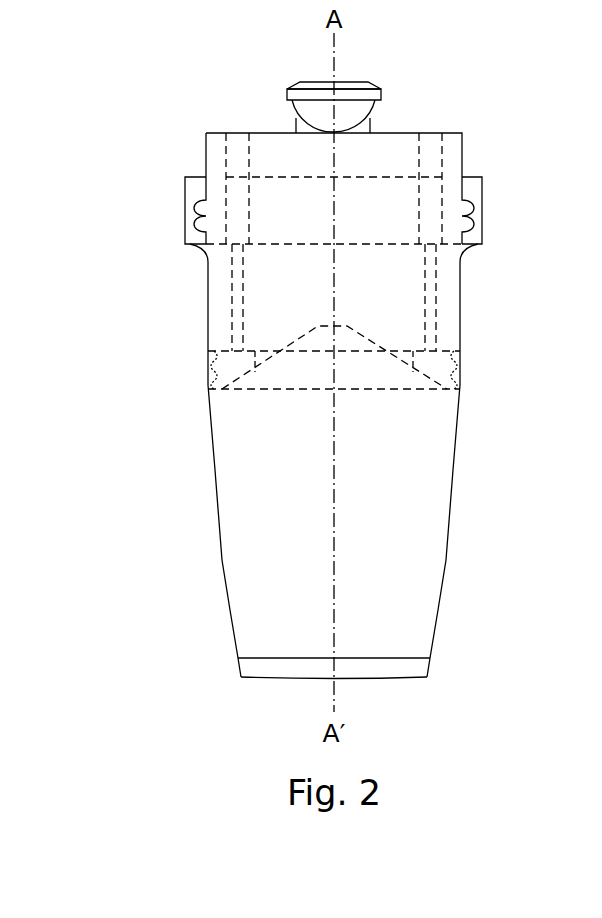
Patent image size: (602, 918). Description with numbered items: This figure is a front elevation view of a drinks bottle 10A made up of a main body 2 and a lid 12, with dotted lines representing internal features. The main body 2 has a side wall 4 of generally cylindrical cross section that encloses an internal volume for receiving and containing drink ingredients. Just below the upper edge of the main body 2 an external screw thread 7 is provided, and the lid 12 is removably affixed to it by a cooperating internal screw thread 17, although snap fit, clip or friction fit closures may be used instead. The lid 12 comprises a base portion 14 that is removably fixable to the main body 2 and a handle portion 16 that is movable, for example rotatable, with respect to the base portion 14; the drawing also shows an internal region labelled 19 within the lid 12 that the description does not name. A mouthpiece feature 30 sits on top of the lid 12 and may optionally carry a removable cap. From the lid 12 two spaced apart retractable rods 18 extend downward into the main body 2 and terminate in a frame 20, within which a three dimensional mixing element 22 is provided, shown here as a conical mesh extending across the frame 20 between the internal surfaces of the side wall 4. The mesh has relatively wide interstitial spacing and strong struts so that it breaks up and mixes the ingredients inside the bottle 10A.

The drinks bottle 10A is at (506, 112).
The mouthpiece feature 30 is at (375, 82).
The lid 12 is at (537, 147).
The handle portion 16 is at (462, 156).
The base portion 14 is at (475, 228).
The neck chamber 19 is at (252, 165).
The internal screw thread 17 is at (200, 210).
The external screw thread 7 is at (214, 219).
The retractable rods 18 is at (435, 290).
The main body 2 is at (472, 410).
The side wall 4 is at (460, 440).
The frame 20 is at (447, 363).
The mixing element 22 is at (343, 326).